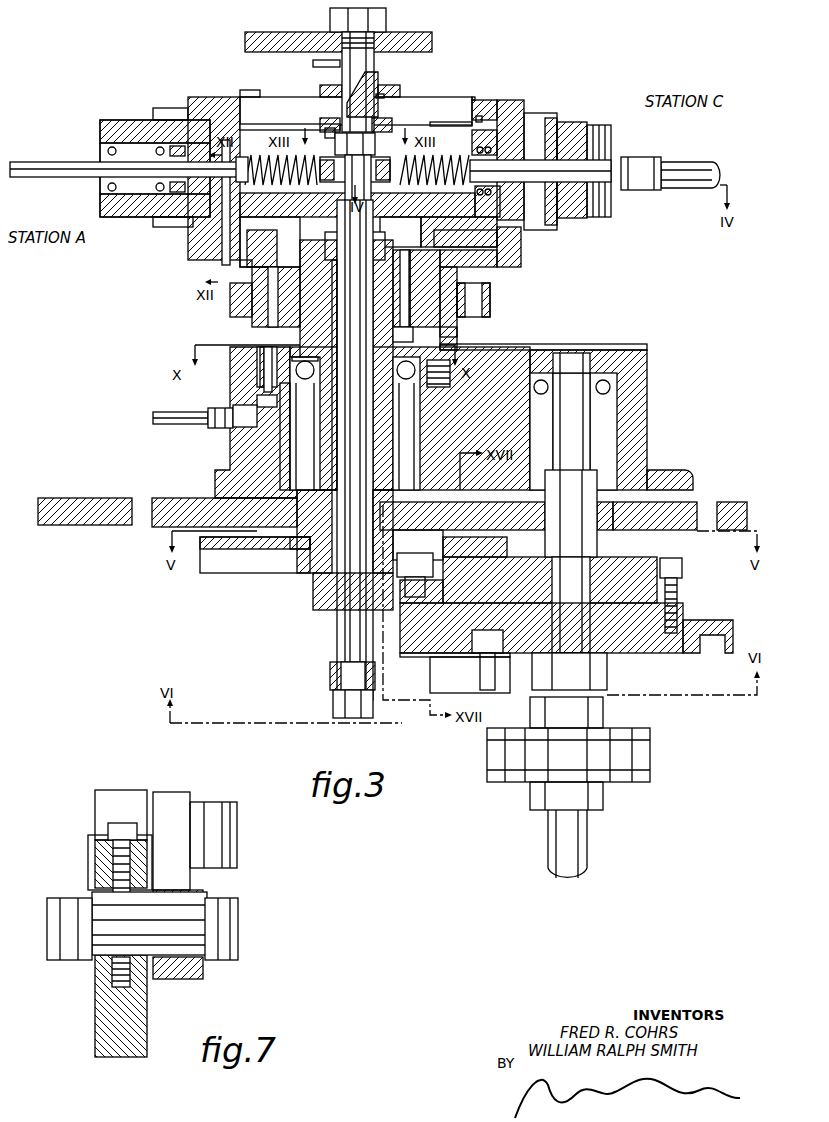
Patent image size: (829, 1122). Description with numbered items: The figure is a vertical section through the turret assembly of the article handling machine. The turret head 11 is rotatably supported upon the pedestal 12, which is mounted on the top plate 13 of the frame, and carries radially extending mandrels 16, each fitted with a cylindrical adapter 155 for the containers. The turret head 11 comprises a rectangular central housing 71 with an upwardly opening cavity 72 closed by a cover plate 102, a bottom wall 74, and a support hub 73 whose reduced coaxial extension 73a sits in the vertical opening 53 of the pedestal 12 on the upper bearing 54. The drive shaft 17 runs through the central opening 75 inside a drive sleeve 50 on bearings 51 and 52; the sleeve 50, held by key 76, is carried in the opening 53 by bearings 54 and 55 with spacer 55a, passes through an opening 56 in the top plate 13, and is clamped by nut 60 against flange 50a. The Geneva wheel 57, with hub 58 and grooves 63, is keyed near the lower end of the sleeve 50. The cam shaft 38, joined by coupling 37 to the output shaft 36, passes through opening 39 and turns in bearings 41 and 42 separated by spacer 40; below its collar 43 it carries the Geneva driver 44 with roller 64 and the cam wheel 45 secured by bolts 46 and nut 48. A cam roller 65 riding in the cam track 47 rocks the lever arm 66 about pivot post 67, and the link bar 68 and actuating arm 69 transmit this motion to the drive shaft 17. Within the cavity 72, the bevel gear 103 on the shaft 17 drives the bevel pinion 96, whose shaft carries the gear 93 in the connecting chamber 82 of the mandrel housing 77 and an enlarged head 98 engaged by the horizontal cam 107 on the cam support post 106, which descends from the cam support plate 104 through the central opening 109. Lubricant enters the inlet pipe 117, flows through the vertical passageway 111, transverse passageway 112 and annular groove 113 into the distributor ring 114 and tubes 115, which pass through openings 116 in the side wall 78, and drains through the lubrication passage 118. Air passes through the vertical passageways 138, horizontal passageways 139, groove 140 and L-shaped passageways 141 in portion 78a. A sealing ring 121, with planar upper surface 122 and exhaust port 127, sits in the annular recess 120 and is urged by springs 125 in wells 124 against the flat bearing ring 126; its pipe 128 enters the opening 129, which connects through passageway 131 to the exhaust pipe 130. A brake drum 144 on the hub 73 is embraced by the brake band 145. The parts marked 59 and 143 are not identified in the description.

In FIG. 3, the turret head 11 is at (480, 80).
In FIG. 3, the pedestal 12 is at (647, 369).
In FIG. 3, the top plate 13 is at (692, 502).
In FIG. 3, the mandrels 16 is at (55, 163).
In FIG. 3, the drive shaft 17 is at (340, 633).
In FIG. 3, the output shaft 36 is at (582, 838).
In FIG. 3, the coupling 37 is at (652, 740).
In FIG. 3, the cam shaft 38 is at (590, 422).
In FIG. 3, the opening 39 is at (641, 526).
In FIG. 3, the spacer 40 is at (606, 440).
In FIG. 3, the bearing 41 is at (620, 393).
In FIG. 3, the bearing 42 is at (630, 482).
In FIG. 3, the collar 43 is at (592, 543).
In FIG. 3, the Geneva driver 44 is at (520, 557).
In FIG. 3, the cam wheel 45 is at (690, 614).
In FIG. 3, the bolts 46 is at (680, 590).
In FIG. 3, the cam track 47 is at (683, 645).
In FIG. 3, the nut 48 is at (600, 679).
In FIG. 3, the drive sleeve 50 is at (318, 471).
In FIG. 3, the flange 50a is at (355, 246).
In FIG. 3, the bearing 51 is at (326, 246).
In FIG. 3, the bearing 52 is at (330, 666).
In FIG. 3, the vertical opening 53 is at (290, 446).
In FIG. 3, the bearing 54 is at (397, 384).
In FIG. 3, the bearing 55 is at (396, 472).
In FIG. 3, the spacer 55a is at (332, 412).
In FIG. 3, the opening 56 is at (240, 498).
In FIG. 3, the Geneva wheel 57 is at (242, 545).
In FIG. 3, the hub 58 is at (290, 545).
In FIG. 3, the hub 59 is at (336, 511).
In FIG. 3, the nut 60 is at (313, 590).
In FIG. 3, the grooves 63 is at (238, 570).
In FIG. 3, the roller 64 is at (432, 561).
In FIG. 3, the cam roller 65 is at (480, 637).
In FIG. 3, the lever arm 66 is at (432, 676).
In FIG. 7, the lever arm 66 is at (125, 795).
In FIG. 3, the pivot post 67 is at (430, 655).
In FIG. 7, the link bar 68 is at (178, 795).
In FIG. 3, the drive shaft actuating arm 69 is at (335, 681).
In FIG. 7, the drive shaft actuating arm 69 is at (100, 1015).
In FIG. 3, the central housing 71 is at (229, 96).
In FIG. 3, the cavity 72 is at (303, 106).
In FIG. 3, the support hub 73 is at (465, 270).
In FIG. 3, the co-axial extension 73a is at (398, 337).
In FIG. 3, the bottom wall 74 is at (428, 223).
In FIG. 3, the central opening 75 is at (336, 311).
In FIG. 3, the key 76 is at (402, 302).
In FIG. 3, the mandrel housing 77 is at (525, 104).
In FIG. 3, the end wall 78 is at (498, 100).
In FIG. 3, the portion of side wall 78a is at (262, 85).
In FIG. 3, the connecting chamber 82 is at (546, 128).
In FIG. 3, the gear 93 is at (533, 162).
In FIG. 3, the bevel pinion 96 is at (471, 151).
In FIG. 3, the enlarged head 98 is at (403, 176).
In FIG. 3, the cover plate 102 is at (394, 94).
In FIG. 3, the bevel gear 103 is at (276, 224).
In FIG. 3, the cam support plate 104 is at (398, 33).
In FIG. 3, the cam support post 106 is at (366, 60).
In FIG. 3, the horizontal cam 107 is at (356, 165).
In FIG. 3, the central opening 109 is at (385, 96).
In FIG. 3, the vertical passageway 111 is at (345, 120).
In FIG. 3, the transverse passageway 112 is at (388, 130).
In FIG. 3, the annular groove 113 is at (328, 130).
In FIG. 3, the distributor ring 114 is at (318, 125).
In FIG. 3, the tubes 115 is at (432, 122).
In FIG. 3, the openings 116 is at (476, 118).
In FIG. 3, the lubrication inlet pipe 117 is at (313, 63).
In FIG. 3, the lubrication passage 118 is at (274, 309).
In FIG. 3, the annular recess 120 is at (250, 362).
In FIG. 3, the sealing ring 121 is at (257, 346).
In FIG. 3, the planar upper surface 122 is at (462, 346).
In FIG. 3, the circular wells 124 is at (258, 378).
In FIG. 3, the spiral spring 125 is at (436, 388).
In FIG. 3, the flat bearing ring 126 is at (455, 331).
In FIG. 3, the vertical exhaust port 127 is at (257, 401).
In FIG. 3, the pipe 128 is at (301, 385).
In FIG. 3, the vertical opening 129 is at (304, 392).
In FIG. 3, the exhaust pipe 130 is at (155, 421).
In FIG. 3, the passageway 131 is at (240, 425).
In FIG. 3, the vertical passageways 138 is at (270, 286).
In FIG. 3, the horizontal passageways 139 is at (245, 262).
In FIG. 3, the horizontal groove 140 is at (512, 256).
In FIG. 3, the L-shaped passageways 141 is at (233, 222).
In FIG. 3, the block 143 is at (490, 300).
In FIG. 3, the brake drum 144 is at (492, 312).
In FIG. 3, the brake band 145 is at (232, 313).
In FIG. 3, the cylindrical adapter 155 is at (638, 182).